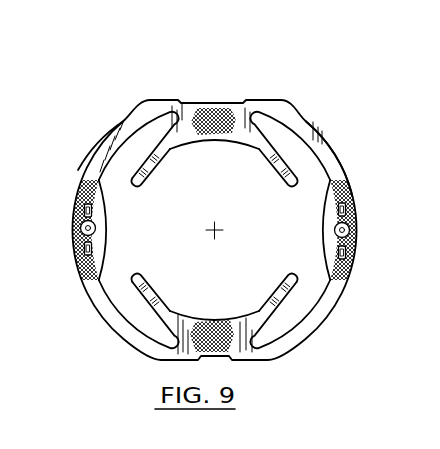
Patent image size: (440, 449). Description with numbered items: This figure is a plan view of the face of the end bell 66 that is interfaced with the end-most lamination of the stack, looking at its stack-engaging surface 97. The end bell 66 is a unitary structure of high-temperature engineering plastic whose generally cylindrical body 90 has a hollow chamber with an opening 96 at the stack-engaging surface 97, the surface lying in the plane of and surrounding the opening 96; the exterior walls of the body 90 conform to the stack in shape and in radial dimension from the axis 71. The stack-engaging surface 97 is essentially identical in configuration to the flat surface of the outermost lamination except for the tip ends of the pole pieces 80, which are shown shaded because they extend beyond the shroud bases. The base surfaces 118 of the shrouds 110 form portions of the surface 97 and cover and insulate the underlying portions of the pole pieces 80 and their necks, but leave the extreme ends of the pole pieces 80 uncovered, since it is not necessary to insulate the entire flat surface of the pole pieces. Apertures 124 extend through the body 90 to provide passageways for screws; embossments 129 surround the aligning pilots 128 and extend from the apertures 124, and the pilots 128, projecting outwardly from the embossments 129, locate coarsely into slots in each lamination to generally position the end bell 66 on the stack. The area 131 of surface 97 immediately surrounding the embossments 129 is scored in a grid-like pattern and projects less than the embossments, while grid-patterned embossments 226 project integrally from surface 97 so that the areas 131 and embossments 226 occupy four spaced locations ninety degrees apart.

The end bell 66 is at (118, 106).
The body 90 is at (101, 144).
The stack-engaging surface 97 is at (298, 119).
The opening 96 is at (310, 162).
The pole pieces 80 is at (296, 186).
The shrouds 110 is at (240, 149).
The embossments 129 is at (354, 278).
The aligning pilots 128 is at (357, 206).
The apertures 124 is at (356, 230).
The grid-patterned area 131 is at (356, 252).
The embossments 226 is at (197, 107).
The base surfaces 118 is at (240, 117).
The axis 71 is at (210, 234).